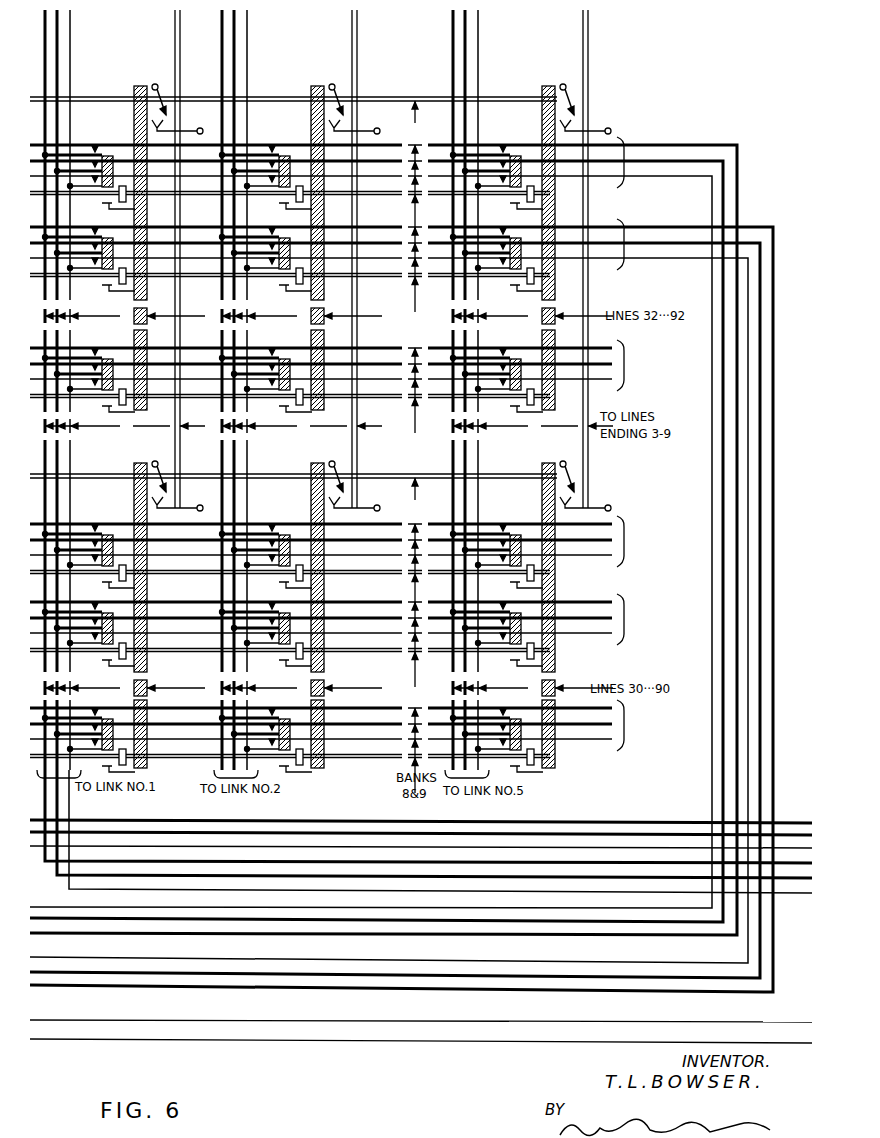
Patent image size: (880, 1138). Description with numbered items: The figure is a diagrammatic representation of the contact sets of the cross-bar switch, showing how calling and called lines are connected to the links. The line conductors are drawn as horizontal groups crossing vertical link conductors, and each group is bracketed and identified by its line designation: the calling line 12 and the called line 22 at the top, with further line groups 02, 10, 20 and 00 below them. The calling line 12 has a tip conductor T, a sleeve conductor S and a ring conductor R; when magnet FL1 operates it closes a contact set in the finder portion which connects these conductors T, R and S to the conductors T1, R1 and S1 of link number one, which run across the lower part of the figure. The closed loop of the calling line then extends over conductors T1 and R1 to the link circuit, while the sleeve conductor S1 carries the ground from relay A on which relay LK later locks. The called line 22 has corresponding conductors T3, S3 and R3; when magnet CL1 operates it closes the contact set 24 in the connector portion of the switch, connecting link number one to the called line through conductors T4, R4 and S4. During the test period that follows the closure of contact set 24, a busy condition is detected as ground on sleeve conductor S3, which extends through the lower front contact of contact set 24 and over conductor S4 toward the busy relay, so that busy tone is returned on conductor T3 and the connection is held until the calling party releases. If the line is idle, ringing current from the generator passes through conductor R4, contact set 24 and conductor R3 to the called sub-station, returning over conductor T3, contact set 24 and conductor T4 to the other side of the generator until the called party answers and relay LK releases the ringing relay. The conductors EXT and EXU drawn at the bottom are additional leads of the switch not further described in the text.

The contact set 24 is at (104, 236).
The calling line 12 is at (631, 162).
The called line 22 is at (631, 244).
The line group 02 is at (632, 365).
The line group 10 is at (632, 541).
The line group 20 is at (632, 619).
The line group 00 is at (632, 725).
The tip conductor T is at (48, 942).
The sleeve conductor S is at (46, 898).
The ring conductor R is at (70, 942).
The tip conductor T3 is at (58, 976).
The sleeve conductor S3 is at (104, 947).
The ring conductor R3 is at (58, 963).
The tip conductor T1 is at (796, 812).
The ring conductor R1 is at (796, 825).
The sleeve conductor S1 is at (796, 838).
The tip conductor T4 is at (796, 853).
The ring conductor R4 is at (796, 868).
The sleeve conductor S4 is at (796, 883).
The extension tip lead EXT is at (766, 1012).
The extension lead EXU is at (766, 1032).